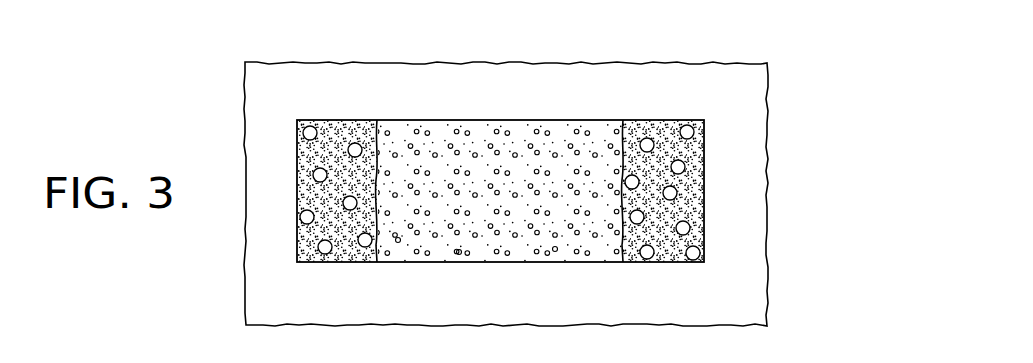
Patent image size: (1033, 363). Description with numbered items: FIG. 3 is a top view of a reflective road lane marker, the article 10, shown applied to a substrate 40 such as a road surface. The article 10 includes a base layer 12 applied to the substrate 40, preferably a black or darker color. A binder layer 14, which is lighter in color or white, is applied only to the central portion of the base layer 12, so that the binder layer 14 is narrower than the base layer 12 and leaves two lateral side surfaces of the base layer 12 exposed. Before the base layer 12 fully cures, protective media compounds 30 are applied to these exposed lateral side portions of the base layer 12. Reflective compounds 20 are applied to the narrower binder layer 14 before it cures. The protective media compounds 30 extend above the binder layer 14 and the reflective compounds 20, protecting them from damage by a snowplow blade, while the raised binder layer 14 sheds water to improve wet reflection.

The article 10 is at (394, 110).
The base layer 12 is at (305, 235).
The binder layer 14 is at (489, 130).
The reflective compounds 20 is at (398, 243).
The protective media compounds 30 is at (307, 130).
The substrate 40 is at (543, 76).